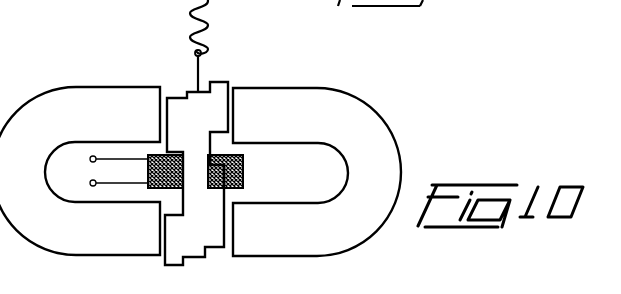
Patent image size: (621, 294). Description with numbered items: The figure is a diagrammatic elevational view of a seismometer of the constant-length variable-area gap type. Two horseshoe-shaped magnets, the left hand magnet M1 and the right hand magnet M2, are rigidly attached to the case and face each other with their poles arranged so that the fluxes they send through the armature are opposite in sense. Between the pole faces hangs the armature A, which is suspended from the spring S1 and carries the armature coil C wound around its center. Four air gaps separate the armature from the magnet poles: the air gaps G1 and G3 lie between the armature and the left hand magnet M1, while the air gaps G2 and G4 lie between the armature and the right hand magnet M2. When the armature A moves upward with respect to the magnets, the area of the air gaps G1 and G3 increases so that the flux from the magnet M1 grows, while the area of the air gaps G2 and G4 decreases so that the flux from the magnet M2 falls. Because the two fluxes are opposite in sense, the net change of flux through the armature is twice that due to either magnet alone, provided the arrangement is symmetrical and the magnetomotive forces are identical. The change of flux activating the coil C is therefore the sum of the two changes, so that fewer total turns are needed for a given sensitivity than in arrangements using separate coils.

The left hand magnet M1 is at (98, 102).
The right hand magnet M2 is at (310, 103).
The armature A is at (214, 98).
The armature coil C is at (245, 173).
The spring S1 is at (207, 29).
The air gap G1 is at (165, 103).
The air gap G2 is at (229, 110).
The air gap G3 is at (162, 247).
The air gap G4 is at (230, 237).